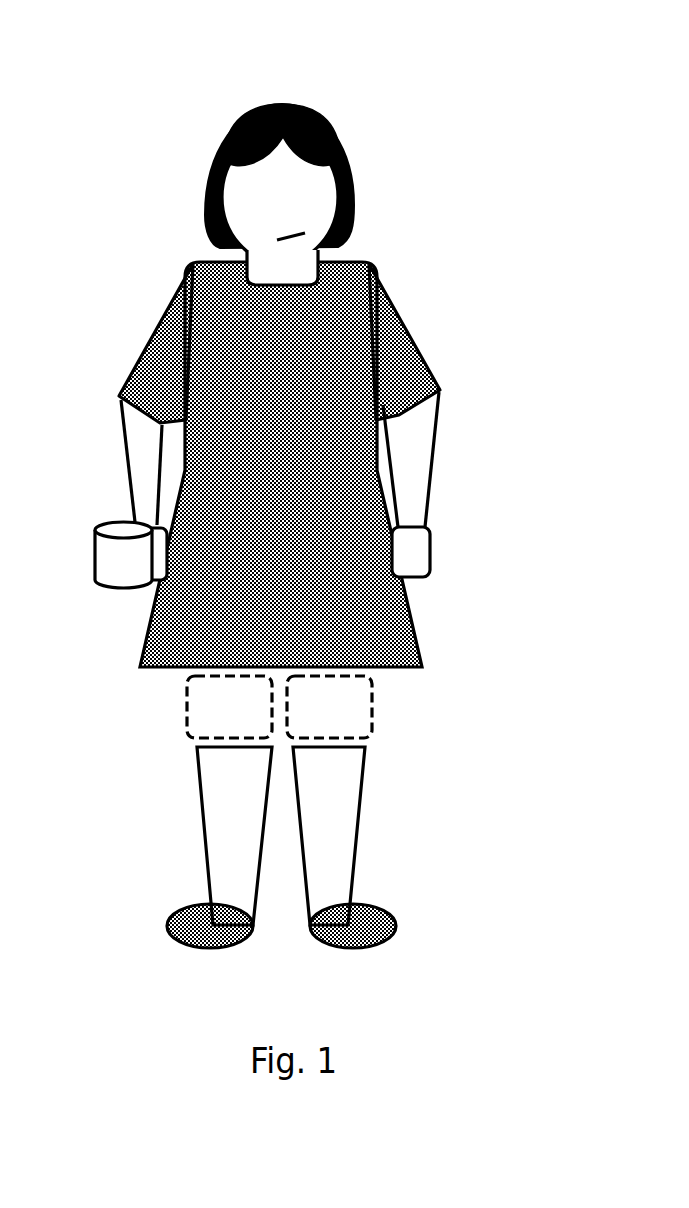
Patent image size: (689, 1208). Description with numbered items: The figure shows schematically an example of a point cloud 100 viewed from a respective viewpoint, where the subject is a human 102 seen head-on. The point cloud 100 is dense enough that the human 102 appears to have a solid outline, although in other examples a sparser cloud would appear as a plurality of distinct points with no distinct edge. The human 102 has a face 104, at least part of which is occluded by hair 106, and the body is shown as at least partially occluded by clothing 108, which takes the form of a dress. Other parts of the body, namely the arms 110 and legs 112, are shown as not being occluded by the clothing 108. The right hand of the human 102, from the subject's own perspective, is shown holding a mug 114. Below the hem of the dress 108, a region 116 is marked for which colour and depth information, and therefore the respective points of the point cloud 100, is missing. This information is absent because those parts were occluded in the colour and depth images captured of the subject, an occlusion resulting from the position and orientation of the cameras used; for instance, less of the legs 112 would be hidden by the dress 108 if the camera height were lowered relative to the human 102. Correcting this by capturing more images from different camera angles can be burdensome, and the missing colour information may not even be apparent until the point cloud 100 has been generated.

The point cloud 100 is at (119, 46).
The human 102 is at (195, 267).
The face 104 is at (331, 204).
The hair 106 is at (332, 122).
The clothing 108 is at (352, 286).
The arms 110 is at (418, 468).
The legs 112 is at (358, 847).
The mug 114 is at (96, 543).
The region 116 is at (372, 707).